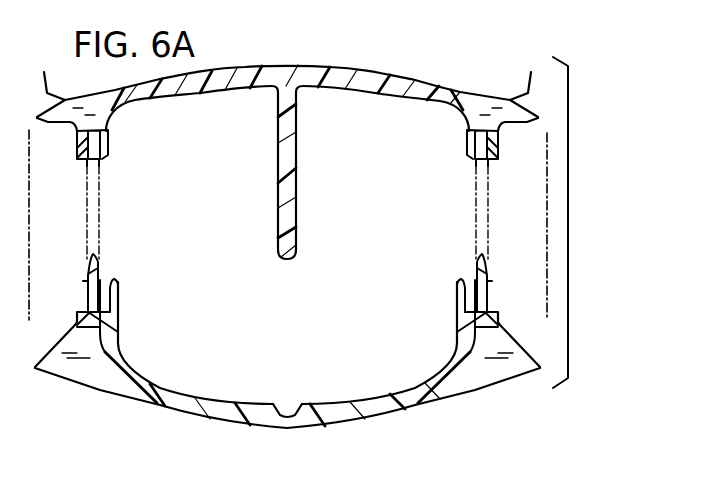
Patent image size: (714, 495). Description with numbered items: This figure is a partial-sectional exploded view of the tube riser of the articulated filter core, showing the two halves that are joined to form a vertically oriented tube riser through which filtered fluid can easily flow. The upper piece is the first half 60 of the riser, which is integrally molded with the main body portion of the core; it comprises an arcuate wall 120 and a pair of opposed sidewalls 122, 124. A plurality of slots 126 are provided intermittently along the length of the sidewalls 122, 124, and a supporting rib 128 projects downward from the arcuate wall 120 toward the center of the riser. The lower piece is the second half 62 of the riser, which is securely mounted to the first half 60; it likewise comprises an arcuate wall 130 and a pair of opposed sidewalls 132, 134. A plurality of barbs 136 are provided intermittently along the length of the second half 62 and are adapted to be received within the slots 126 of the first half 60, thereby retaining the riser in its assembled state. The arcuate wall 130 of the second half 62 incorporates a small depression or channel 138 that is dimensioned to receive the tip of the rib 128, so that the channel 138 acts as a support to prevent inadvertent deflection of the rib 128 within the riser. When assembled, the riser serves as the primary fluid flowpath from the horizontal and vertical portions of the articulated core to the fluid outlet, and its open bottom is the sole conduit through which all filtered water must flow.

The first half of the tube riser 60 is at (242, 63).
The second half of the tube riser 62 is at (172, 417).
The arcuate wall 120 is at (365, 70).
The sidewall 122 is at (110, 137).
The sidewall 124 is at (466, 132).
The slots 126 is at (92, 163).
The supporting rib 128 is at (292, 218).
The arcuate wall 130 is at (363, 420).
The sidewall 132 is at (120, 303).
The sidewall 134 is at (458, 298).
The barbs 136 is at (88, 270).
The channel 138 is at (285, 413).